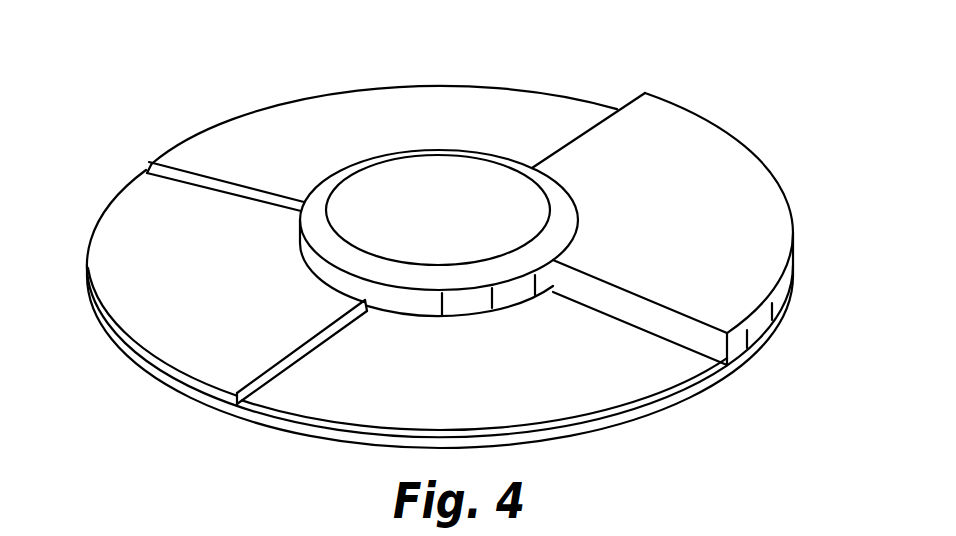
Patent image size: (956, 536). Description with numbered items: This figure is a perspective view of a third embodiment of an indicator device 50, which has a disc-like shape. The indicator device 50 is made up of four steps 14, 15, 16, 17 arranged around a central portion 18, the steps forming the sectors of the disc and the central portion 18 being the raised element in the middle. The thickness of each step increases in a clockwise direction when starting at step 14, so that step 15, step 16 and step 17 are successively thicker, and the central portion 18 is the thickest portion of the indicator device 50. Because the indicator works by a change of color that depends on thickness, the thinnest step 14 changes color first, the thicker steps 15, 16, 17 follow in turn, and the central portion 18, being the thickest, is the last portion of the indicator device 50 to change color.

The indicator device 50 is at (246, 90).
The step 14 is at (597, 380).
The step 15 is at (205, 327).
The step 16 is at (397, 107).
The step 17 is at (735, 181).
The central portion 18 is at (372, 228).